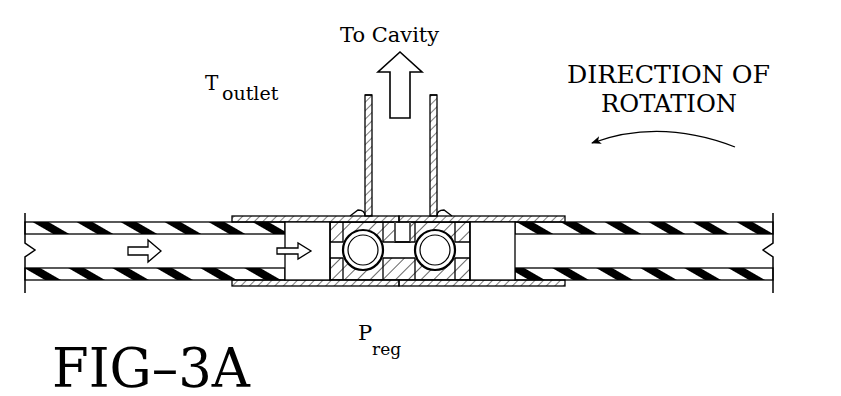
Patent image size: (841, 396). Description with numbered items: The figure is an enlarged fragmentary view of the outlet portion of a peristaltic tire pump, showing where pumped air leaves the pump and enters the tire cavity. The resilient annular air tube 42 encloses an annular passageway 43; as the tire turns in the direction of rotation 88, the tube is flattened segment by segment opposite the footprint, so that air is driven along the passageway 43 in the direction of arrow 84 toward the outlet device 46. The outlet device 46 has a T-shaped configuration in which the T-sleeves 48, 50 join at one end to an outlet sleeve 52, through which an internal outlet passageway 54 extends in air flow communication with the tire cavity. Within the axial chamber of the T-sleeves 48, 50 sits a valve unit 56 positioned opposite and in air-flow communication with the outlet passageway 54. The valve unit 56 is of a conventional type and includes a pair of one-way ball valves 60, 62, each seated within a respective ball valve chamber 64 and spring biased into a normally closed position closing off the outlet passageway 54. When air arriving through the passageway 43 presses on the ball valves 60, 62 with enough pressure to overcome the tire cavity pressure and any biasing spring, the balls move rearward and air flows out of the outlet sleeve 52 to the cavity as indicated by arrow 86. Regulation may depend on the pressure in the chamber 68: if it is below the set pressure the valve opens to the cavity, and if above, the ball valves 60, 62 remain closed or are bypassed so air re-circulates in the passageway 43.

The annular air tube 42 is at (63, 222).
The annular passageway 43 is at (692, 268).
The outlet device 46 is at (439, 153).
The T-sleeve 48 is at (561, 220).
The T-sleeve 50 is at (250, 217).
The outlet sleeve 52 is at (437, 120).
The internal outlet passageway 54 is at (382, 138).
The valve unit 56 is at (470, 282).
The one-way ball valve 60 is at (357, 244).
The one-way ball valve 62 is at (439, 244).
The ball valve chamber 64 is at (381, 264).
The chamber 68 is at (405, 232).
The air flow direction arrow 84 is at (130, 252).
The air exit flow arrow 86 is at (411, 80).
The direction of tire rotation 88 is at (717, 140).